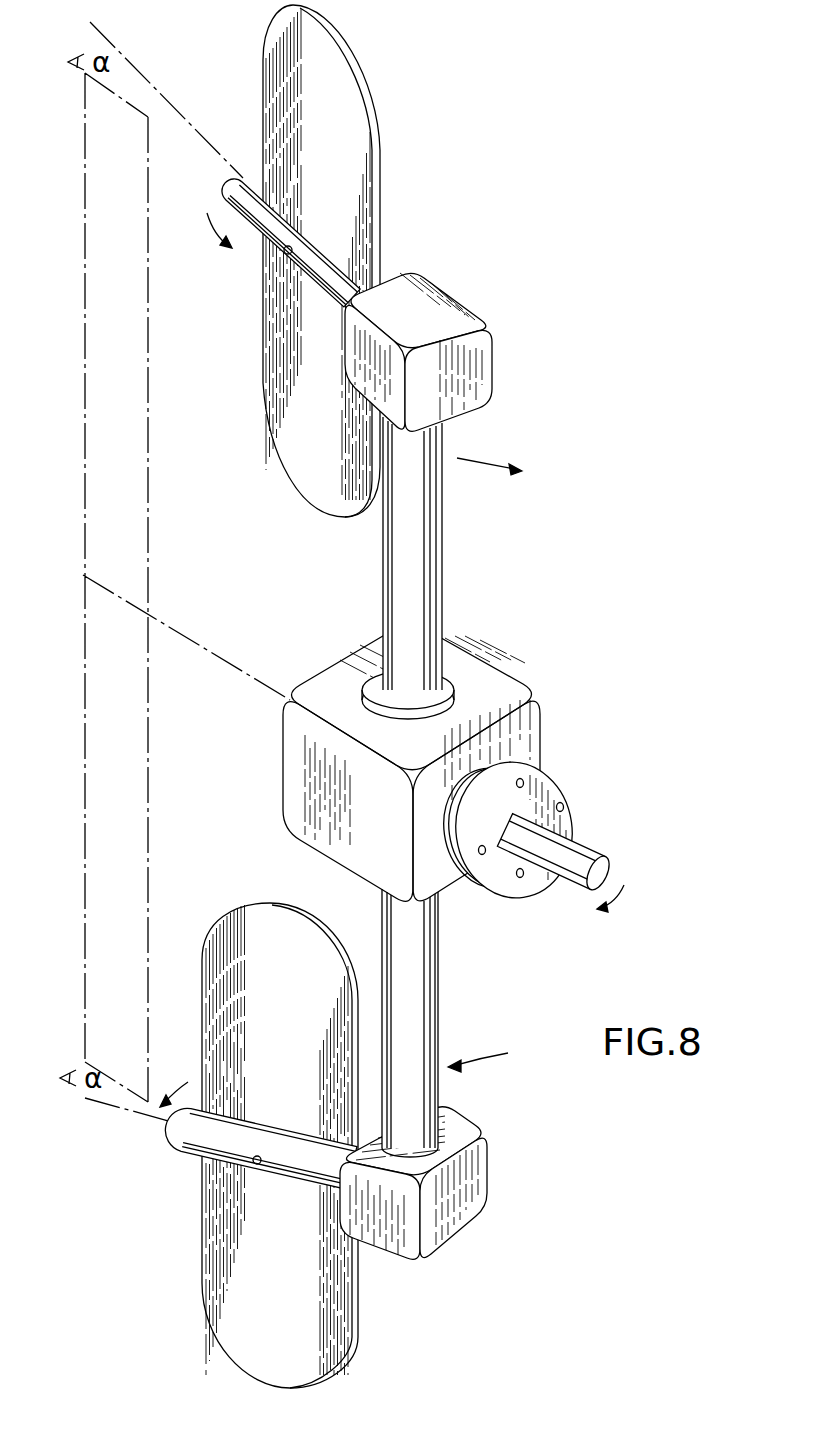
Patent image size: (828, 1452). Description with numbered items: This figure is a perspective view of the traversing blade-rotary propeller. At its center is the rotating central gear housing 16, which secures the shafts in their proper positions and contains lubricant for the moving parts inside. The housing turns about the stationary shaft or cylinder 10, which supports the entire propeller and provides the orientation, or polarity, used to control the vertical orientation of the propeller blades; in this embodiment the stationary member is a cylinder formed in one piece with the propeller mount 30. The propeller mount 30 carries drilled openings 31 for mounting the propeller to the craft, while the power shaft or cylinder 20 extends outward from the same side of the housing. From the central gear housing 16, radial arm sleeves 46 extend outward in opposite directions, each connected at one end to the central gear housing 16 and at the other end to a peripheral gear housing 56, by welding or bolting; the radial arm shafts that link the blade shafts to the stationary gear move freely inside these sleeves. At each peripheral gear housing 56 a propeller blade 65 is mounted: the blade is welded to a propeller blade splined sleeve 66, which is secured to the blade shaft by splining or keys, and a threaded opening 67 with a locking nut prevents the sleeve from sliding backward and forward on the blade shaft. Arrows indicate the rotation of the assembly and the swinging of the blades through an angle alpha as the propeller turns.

The stationary shaft or cylinder 10 is at (452, 820).
The central gear housing 16 is at (482, 672).
The power shaft or cylinder 20 is at (571, 853).
The propeller mount 30 is at (493, 892).
The drilled opening 31 is at (485, 854).
The radial arm sleeve 46 is at (443, 545).
The peripheral gear housing 56 is at (493, 373).
The propeller blade 65 is at (262, 48).
The propeller blade splined sleeve 66 is at (243, 200).
The threaded opening with locking nut 67 is at (292, 252).